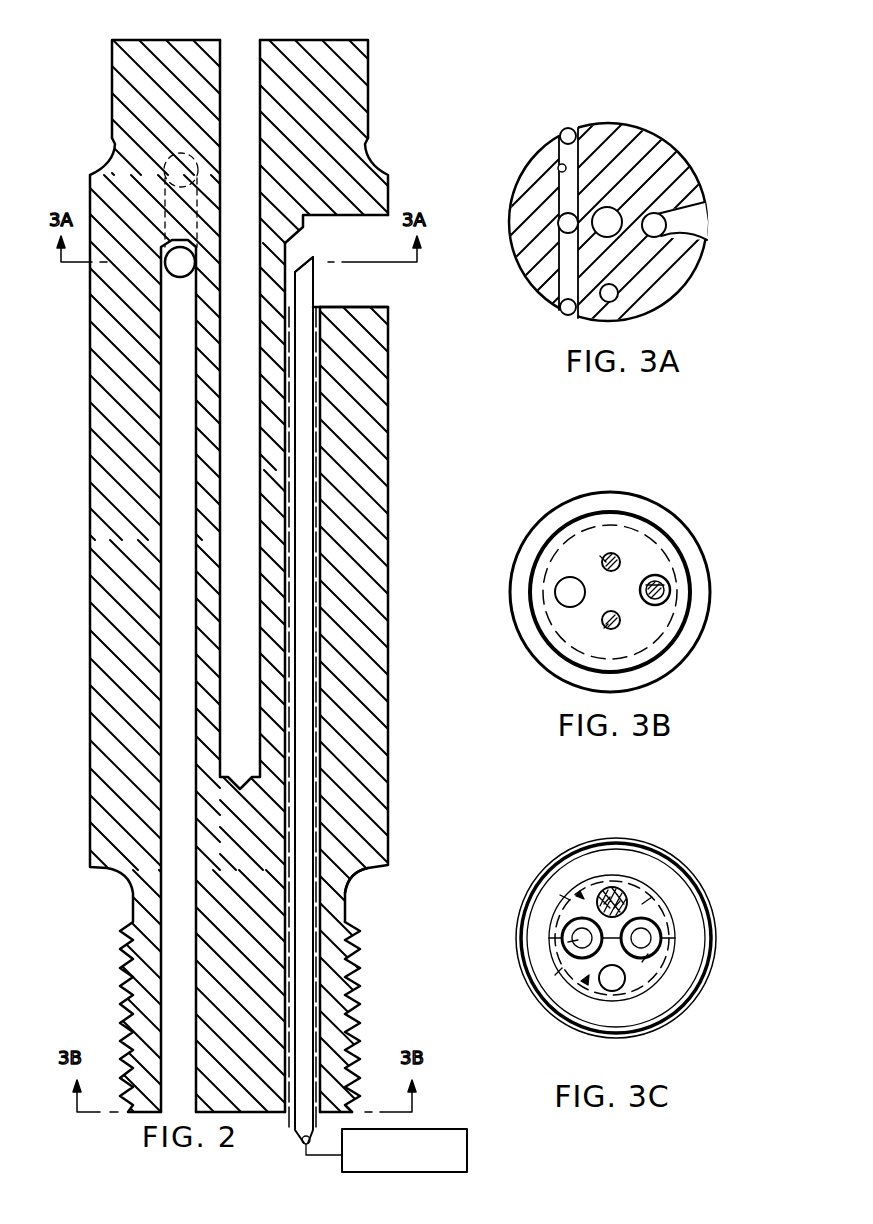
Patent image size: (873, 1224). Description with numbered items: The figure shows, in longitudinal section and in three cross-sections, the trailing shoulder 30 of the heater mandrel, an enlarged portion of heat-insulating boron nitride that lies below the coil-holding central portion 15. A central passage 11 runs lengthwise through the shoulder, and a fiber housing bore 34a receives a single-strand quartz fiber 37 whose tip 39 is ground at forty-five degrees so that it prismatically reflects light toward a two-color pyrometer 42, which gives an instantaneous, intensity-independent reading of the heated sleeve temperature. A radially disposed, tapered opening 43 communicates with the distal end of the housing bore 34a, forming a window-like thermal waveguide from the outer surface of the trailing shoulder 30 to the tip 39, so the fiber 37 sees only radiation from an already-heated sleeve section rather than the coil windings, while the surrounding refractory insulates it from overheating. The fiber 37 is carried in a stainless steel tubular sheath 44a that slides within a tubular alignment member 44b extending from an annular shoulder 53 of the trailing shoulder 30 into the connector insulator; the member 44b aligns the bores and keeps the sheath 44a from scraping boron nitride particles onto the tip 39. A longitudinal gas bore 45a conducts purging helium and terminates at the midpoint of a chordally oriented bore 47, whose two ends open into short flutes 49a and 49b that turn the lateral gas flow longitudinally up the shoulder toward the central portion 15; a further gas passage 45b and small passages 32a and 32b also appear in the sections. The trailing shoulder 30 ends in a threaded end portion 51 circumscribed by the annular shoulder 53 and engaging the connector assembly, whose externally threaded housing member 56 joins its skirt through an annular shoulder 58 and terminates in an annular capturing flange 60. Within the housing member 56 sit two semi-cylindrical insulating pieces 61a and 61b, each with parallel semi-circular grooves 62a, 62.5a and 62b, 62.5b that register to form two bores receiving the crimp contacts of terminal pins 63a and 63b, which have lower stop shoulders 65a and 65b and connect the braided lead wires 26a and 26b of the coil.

In FIG. 2, the central bore 11 is at (221, 62).
In FIG. 3A, the central bore 11 is at (605, 212).
In FIG. 2, the central portion 15 is at (165, 72).
In FIG. 2, the trailing shoulder 30 is at (128, 505).
In FIG. 3A, the trailing shoulder 30 is at (679, 145).
In FIG. 2, the chordally oriented bore 47 is at (176, 268).
In FIG. 3A, the chordally oriented bore 47 is at (560, 167).
In FIG. 2, the gas passage 45a is at (163, 604).
In FIG. 3A, the gas passage 45a is at (560, 223).
In FIG. 3B, the gas passage 45a is at (556, 592).
In FIG. 3C, the gas passage 45b is at (612, 987).
In FIG. 2, the tip 39 is at (300, 257).
In FIG. 2, the radially disposed, tapered opening 43 is at (355, 306).
In FIG. 3A, the radially disposed, tapered opening 43 is at (710, 232).
In FIG. 2, the fiber housing bore 34a is at (313, 542).
In FIG. 3A, the fiber housing bore 34a is at (706, 206).
In FIG. 2, the quartz fiber 37 is at (302, 710).
In FIG. 3B, the quartz fiber 37 is at (670, 622).
In FIG. 3C, the quartz fiber 37 is at (611, 887).
In FIG. 2, the tubular sheath 44a is at (313, 793).
In FIG. 3B, the tubular sheath 44a is at (661, 598).
In FIG. 3C, the tubular sheath 44a is at (622, 893).
In FIG. 2, the tubular alignment member 44b is at (318, 1000).
In FIG. 3B, the tubular alignment member 44b is at (663, 580).
In FIG. 3C, the tubular alignment member 44b is at (621, 900).
In FIG. 2, the annular shoulder 53 is at (353, 880).
In FIG. 3B, the annular shoulder 53 is at (688, 537).
In FIG. 2, the threaded end portion 51 is at (357, 958).
In FIG. 2, the pyrometer 42 is at (470, 1151).
In FIG. 3A, the short flute 49a is at (573, 130).
In FIG. 3A, the short flute 49b is at (566, 311).
In FIG. 3B, the passage 32a is at (617, 558).
In FIG. 3A, the passage 32b is at (609, 301).
In FIG. 3B, the passage 32b is at (616, 628).
In FIG. 3B, the braided lead wire 26a is at (603, 560).
In FIG. 3B, the braided lead wire 26b is at (606, 626).
In FIG. 3C, the annular shoulder 58 is at (625, 839).
In FIG. 3C, the annular capturing flange 60 is at (687, 963).
In FIG. 3C, the housing member 56 is at (660, 918).
In FIG. 3C, the lower stop shoulder 65a is at (573, 928).
In FIG. 3C, the lower stop shoulder 65b is at (673, 938).
In FIG. 3C, the semi-cylindrical insulating piece 61a is at (587, 977).
In FIG. 3C, the semi-cylindrical insulating piece 61b is at (583, 897).
In FIG. 3C, the semi-circular groove 62a is at (645, 958).
In FIG. 3C, the semi-circular groove 62b is at (647, 900).
In FIG. 3C, the semi-circular groove 62.5a is at (558, 972).
In FIG. 3C, the semi-circular groove 62.5b is at (565, 897).
In FIG. 3C, the terminal pin 63a is at (572, 942).
In FIG. 3C, the terminal pin 63b is at (653, 953).